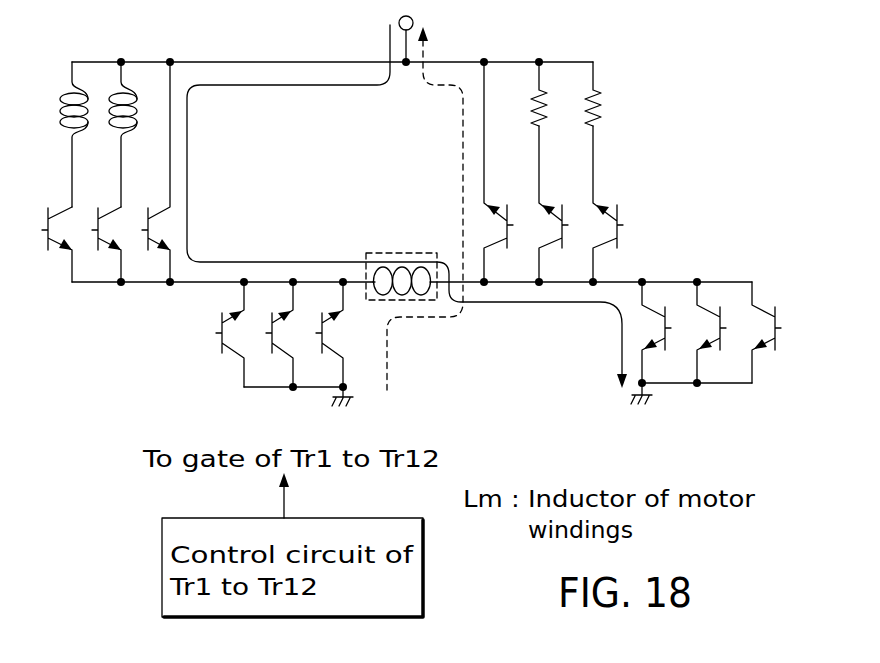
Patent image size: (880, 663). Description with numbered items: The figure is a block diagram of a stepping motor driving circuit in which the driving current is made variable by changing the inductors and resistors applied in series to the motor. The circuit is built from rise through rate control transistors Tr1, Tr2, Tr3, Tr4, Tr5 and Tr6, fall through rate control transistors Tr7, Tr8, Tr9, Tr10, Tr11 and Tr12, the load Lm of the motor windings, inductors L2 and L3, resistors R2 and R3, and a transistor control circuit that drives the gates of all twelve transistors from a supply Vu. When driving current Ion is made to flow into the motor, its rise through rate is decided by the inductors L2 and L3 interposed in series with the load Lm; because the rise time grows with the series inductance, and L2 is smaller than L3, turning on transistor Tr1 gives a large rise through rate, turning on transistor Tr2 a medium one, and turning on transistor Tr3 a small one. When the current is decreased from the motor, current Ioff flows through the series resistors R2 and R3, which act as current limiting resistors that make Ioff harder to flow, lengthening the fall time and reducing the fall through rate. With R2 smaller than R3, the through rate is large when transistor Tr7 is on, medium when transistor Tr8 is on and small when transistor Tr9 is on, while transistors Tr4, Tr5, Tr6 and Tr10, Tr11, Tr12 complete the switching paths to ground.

The power supply voltage terminal Vu is at (408, 31).
The driving current Ion is at (407, 206).
The current Ioff is at (425, 208).
The inductor L2 is at (112, 134).
The inductor L3 is at (62, 134).
The load of motor windings Lm is at (395, 290).
The resistor R2 is at (557, 94).
The resistor R3 is at (610, 94).
The rise through rate control transistor Tr1 is at (148, 172).
The rise through rate control transistor Tr2 is at (98, 226).
The rise through rate control transistor Tr3 is at (49, 226).
The rise through rate control transistor Tr4 is at (655, 361).
The rise through rate control transistor Tr5 is at (713, 361).
The rise through rate control transistor Tr6 is at (771, 361).
The fall through rate control transistor Tr7 is at (506, 172).
The fall through rate control transistor Tr8 is at (560, 204).
The fall through rate control transistor Tr9 is at (616, 204).
The fall through rate control transistor Tr10 is at (340, 360).
The fall through rate control transistor Tr11 is at (273, 360).
The fall through rate control transistor Tr12 is at (213, 360).